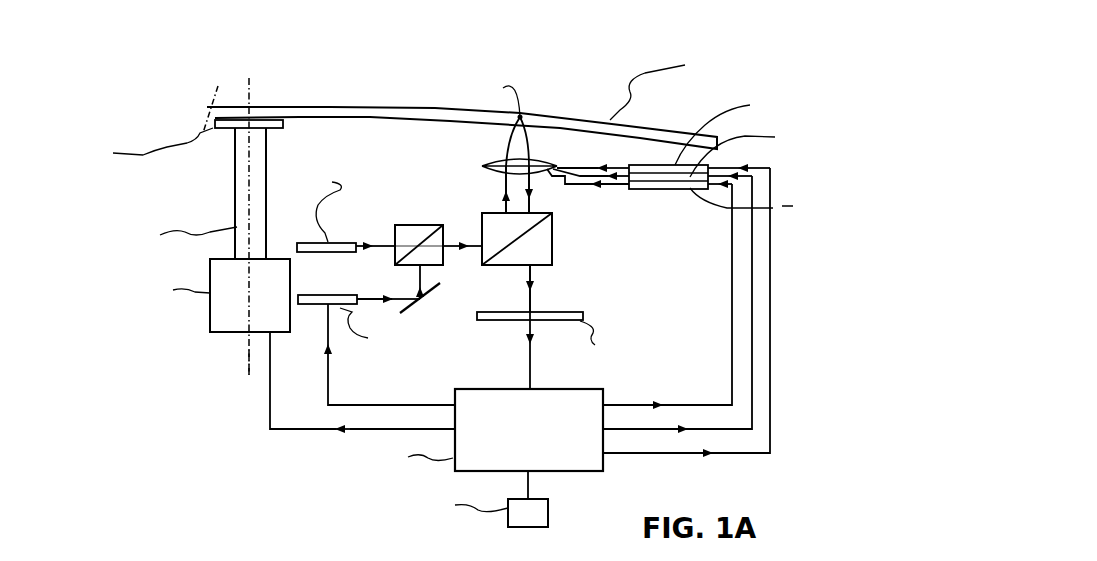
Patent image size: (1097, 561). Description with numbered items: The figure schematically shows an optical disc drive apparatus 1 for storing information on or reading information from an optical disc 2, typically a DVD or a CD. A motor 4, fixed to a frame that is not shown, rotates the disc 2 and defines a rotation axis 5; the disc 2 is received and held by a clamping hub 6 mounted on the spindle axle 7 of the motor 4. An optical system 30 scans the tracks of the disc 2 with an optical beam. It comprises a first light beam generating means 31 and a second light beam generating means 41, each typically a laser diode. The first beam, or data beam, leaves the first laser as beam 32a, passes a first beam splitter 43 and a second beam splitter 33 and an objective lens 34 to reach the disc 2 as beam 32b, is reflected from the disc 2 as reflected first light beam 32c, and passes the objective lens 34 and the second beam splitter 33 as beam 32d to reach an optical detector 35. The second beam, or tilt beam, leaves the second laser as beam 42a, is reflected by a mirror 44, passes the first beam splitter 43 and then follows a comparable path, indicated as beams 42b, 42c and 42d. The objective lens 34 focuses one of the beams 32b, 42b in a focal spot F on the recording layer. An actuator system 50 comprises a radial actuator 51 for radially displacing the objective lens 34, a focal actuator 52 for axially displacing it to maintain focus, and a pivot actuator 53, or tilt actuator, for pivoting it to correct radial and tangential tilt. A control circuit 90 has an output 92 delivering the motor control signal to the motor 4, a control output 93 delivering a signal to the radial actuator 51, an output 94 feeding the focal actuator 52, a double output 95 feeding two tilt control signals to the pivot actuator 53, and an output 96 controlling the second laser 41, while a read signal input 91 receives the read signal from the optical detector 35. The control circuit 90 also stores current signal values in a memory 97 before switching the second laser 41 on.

The optical disc drive apparatus 1 is at (668, 38).
The optical disc 2 is at (397, 107).
The motor 4 is at (255, 305).
The rotation axis 5 is at (245, 357).
The clamping hub 6 is at (223, 130).
The spindle axle 7 is at (235, 201).
The optical system 30 is at (367, 182).
The first light beam generating means 31 is at (313, 242).
The first light beam 32a is at (370, 242).
The first light beam 32b is at (508, 157).
The reflected first light beam 32c is at (532, 156).
The first light beam 32d is at (537, 275).
The second beam splitter 33 is at (553, 237).
The objective lens 34 is at (490, 171).
The optical detector 35 is at (585, 316).
The second light beam generating means 41 is at (337, 293).
The second light beam 42a is at (383, 297).
The second light beam 42b is at (485, 179).
The reflected second light beam 42c is at (554, 180).
The second light beam 42d is at (564, 288).
The first beam splitter 43 is at (420, 225).
The mirror 44 is at (416, 305).
The actuator system 50 is at (683, 265).
The radial actuator 51 is at (670, 186).
The focal actuator 52 is at (660, 177).
The pivot actuator 53 is at (648, 168).
The control circuit 90 is at (537, 439).
The read signal input 91 is at (535, 361).
The output 92 is at (373, 385).
The control output 93 is at (654, 297).
The output 94 is at (664, 307).
The double output 95 is at (673, 314).
The output 96 is at (402, 357).
The memory 97 is at (538, 522).